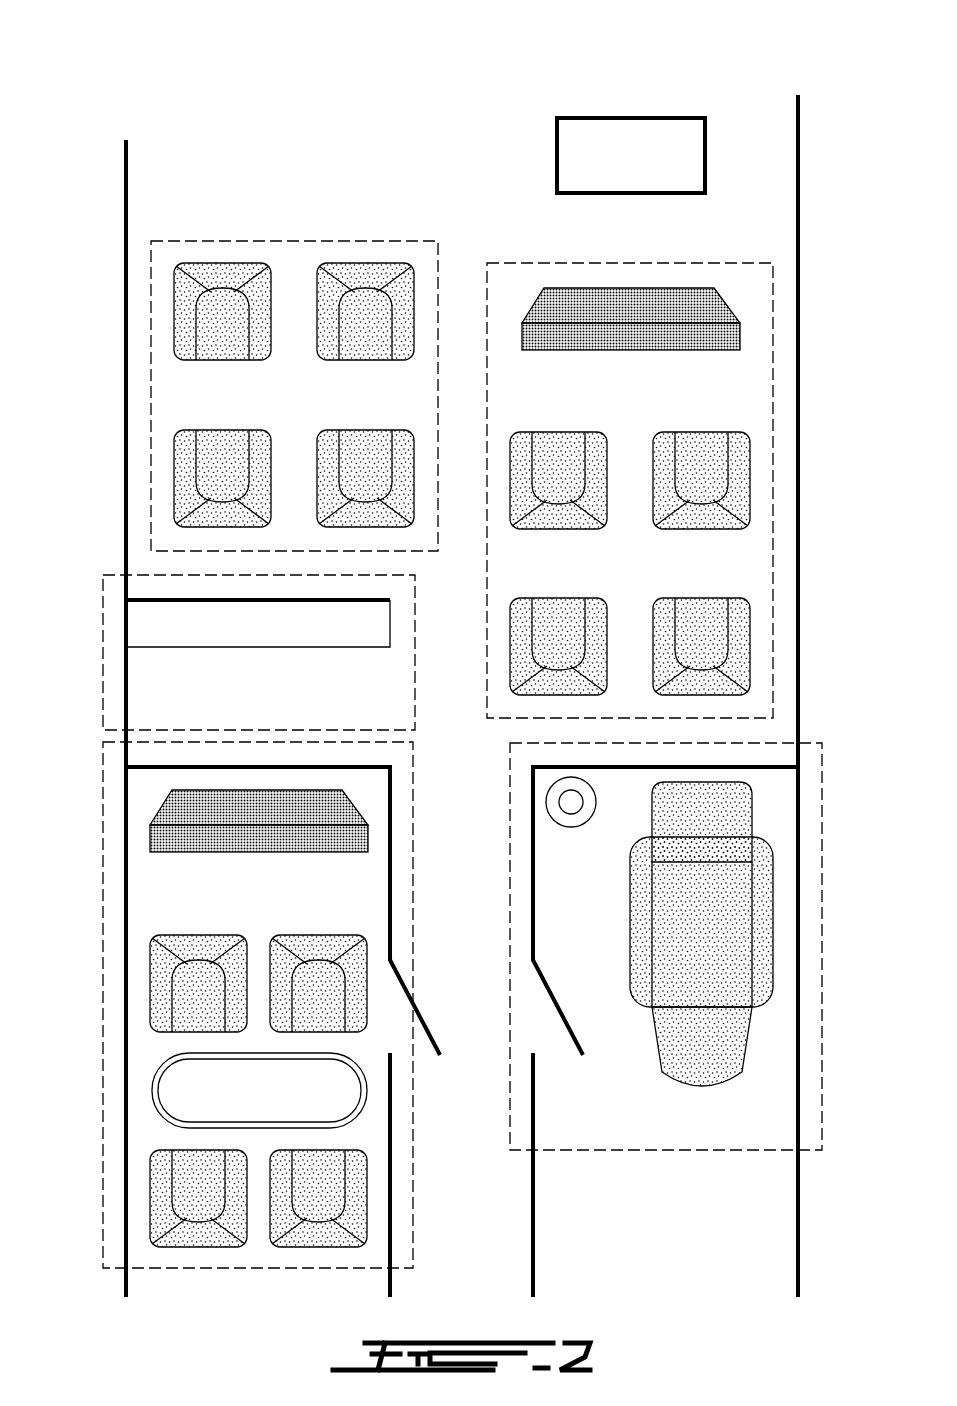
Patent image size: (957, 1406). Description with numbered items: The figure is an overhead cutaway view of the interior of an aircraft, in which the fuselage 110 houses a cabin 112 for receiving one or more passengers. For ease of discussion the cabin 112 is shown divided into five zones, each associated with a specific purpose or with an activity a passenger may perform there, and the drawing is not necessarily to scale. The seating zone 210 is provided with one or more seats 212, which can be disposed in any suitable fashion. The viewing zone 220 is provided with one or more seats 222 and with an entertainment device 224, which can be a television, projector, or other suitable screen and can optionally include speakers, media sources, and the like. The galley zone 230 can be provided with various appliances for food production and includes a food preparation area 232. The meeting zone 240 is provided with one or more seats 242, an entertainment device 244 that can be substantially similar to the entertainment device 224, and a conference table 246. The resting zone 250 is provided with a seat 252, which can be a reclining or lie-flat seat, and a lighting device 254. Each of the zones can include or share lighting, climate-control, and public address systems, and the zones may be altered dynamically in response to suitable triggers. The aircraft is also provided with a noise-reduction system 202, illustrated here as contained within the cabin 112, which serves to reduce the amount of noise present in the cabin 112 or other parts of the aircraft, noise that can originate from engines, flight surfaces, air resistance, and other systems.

The fuselage 110 is at (798, 188).
The cabin 112 is at (334, 104).
The noise-reduction system 202 is at (653, 173).
The seating zone 210 is at (233, 241).
The seats 212 is at (222, 360).
The viewing zone 220 is at (773, 402).
The seats 222 is at (558, 528).
The entertainment device 224 is at (628, 348).
The galley zone 230 is at (103, 648).
The food preparation area 232 is at (205, 647).
The meeting zone 240 is at (103, 870).
The seats 242 is at (318, 935).
The entertainment device 244 is at (282, 852).
The conference table 246 is at (152, 1090).
The resting zone 250 is at (822, 876).
The seat 252 is at (652, 1043).
The lighting device 254 is at (571, 827).